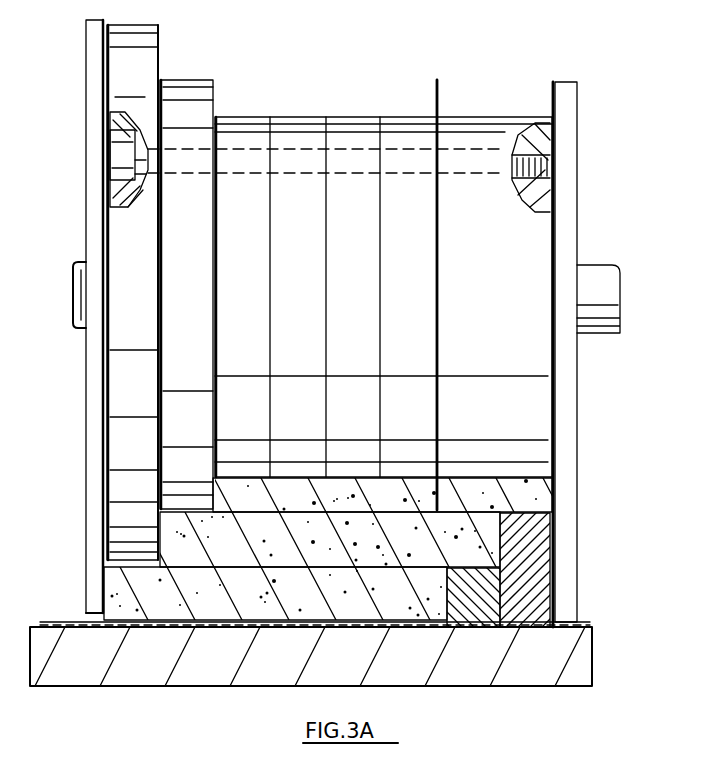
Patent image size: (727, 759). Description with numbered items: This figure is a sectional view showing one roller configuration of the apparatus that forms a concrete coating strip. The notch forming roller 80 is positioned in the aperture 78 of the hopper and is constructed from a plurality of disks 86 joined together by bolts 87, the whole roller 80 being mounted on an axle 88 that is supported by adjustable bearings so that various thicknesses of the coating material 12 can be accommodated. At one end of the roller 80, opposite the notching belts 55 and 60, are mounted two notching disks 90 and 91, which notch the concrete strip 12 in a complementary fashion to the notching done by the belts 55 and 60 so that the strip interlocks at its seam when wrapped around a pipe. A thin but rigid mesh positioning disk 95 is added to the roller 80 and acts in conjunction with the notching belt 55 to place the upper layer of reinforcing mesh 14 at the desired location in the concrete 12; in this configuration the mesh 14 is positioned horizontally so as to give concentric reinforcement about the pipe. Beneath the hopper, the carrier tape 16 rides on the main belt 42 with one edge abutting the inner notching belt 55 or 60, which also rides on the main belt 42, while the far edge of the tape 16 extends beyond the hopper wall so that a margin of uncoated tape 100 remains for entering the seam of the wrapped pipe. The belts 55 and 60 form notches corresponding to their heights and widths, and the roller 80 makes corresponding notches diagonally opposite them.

The coating material 12 is at (218, 613).
The reinforcing mesh 14 is at (140, 578).
The carrier tape 16 is at (364, 628).
The main belt 42 is at (80, 670).
The notching belt 55 is at (535, 595).
The notching belt 60 is at (480, 607).
The aperture 78 is at (500, 103).
The notch forming roller 80 is at (296, 117).
The disks 86 is at (355, 130).
The bolts 87 is at (112, 150).
The axle 88 is at (73, 284).
The notching disk 90 is at (135, 25).
The notching disk 91 is at (190, 78).
The mesh positioning disk 95 is at (440, 103).
The margin of uncoated tape 100 is at (58, 622).